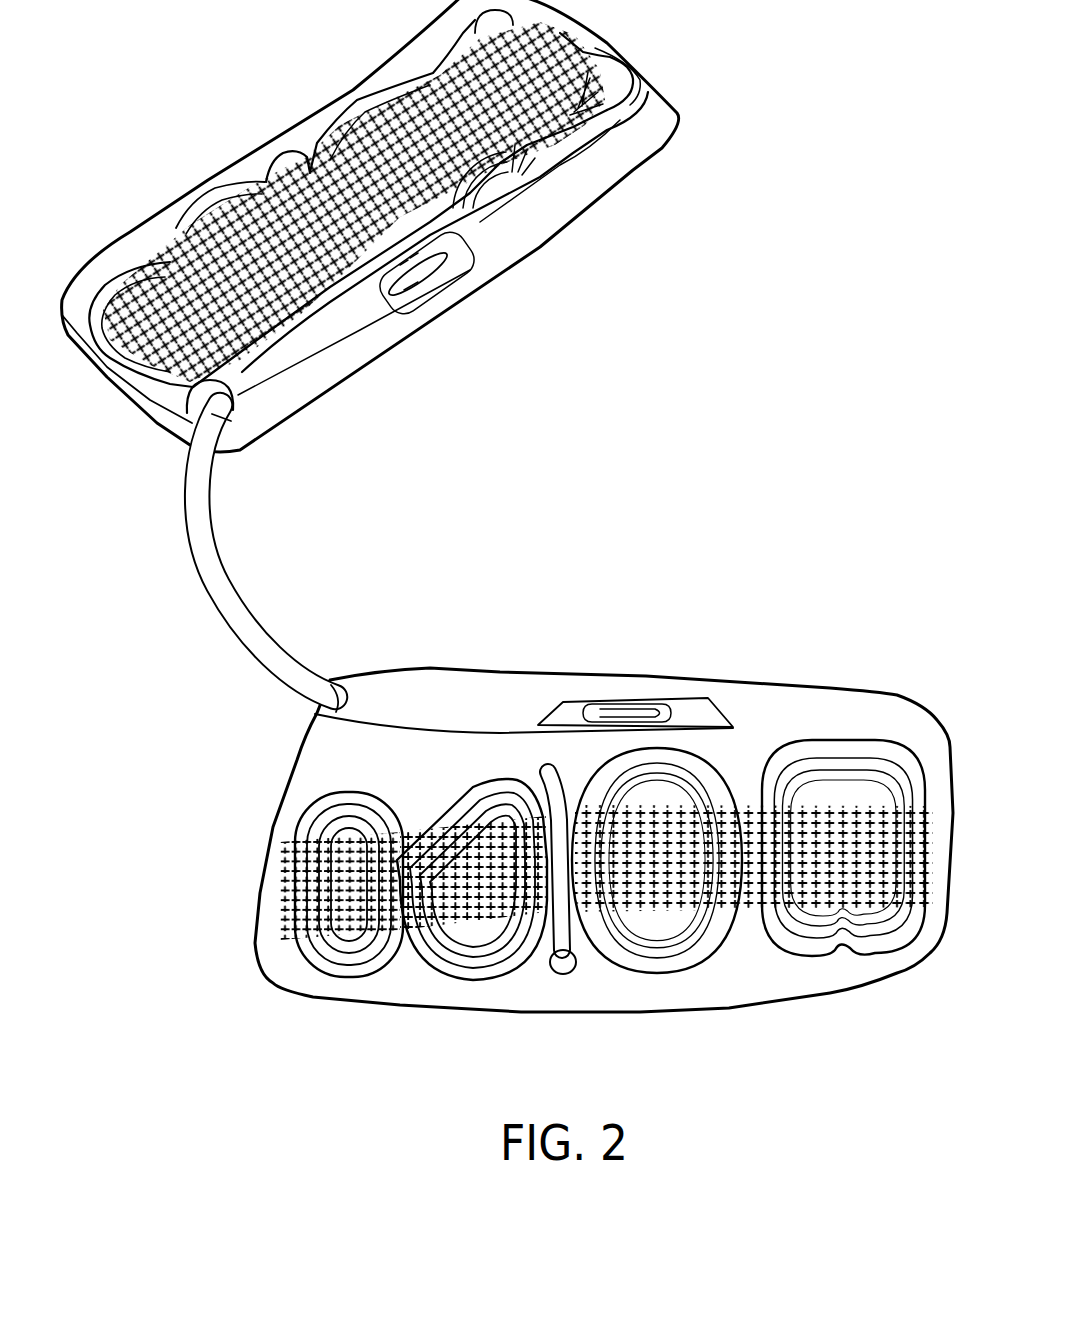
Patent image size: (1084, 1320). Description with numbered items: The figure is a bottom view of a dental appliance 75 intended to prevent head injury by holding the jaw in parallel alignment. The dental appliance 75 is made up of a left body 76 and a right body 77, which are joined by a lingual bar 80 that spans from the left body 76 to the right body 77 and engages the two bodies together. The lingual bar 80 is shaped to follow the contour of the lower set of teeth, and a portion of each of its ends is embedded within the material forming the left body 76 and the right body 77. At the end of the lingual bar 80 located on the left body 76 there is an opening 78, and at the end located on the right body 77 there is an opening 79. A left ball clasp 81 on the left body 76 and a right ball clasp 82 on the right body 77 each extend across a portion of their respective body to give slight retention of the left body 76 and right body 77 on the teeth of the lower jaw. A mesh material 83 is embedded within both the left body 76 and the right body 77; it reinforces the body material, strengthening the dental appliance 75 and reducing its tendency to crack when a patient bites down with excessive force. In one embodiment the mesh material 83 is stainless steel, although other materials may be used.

The dental appliance 75 is at (820, 253).
The left body 76 is at (370, 226).
The right body 77 is at (604, 809).
The opening 78 is at (397, 283).
The opening 79 is at (598, 713).
The lingual bar 80 is at (223, 600).
The left ball clasp 81 is at (297, 155).
The right ball clasp 82 is at (565, 962).
The mesh material 83 is at (413, 197).